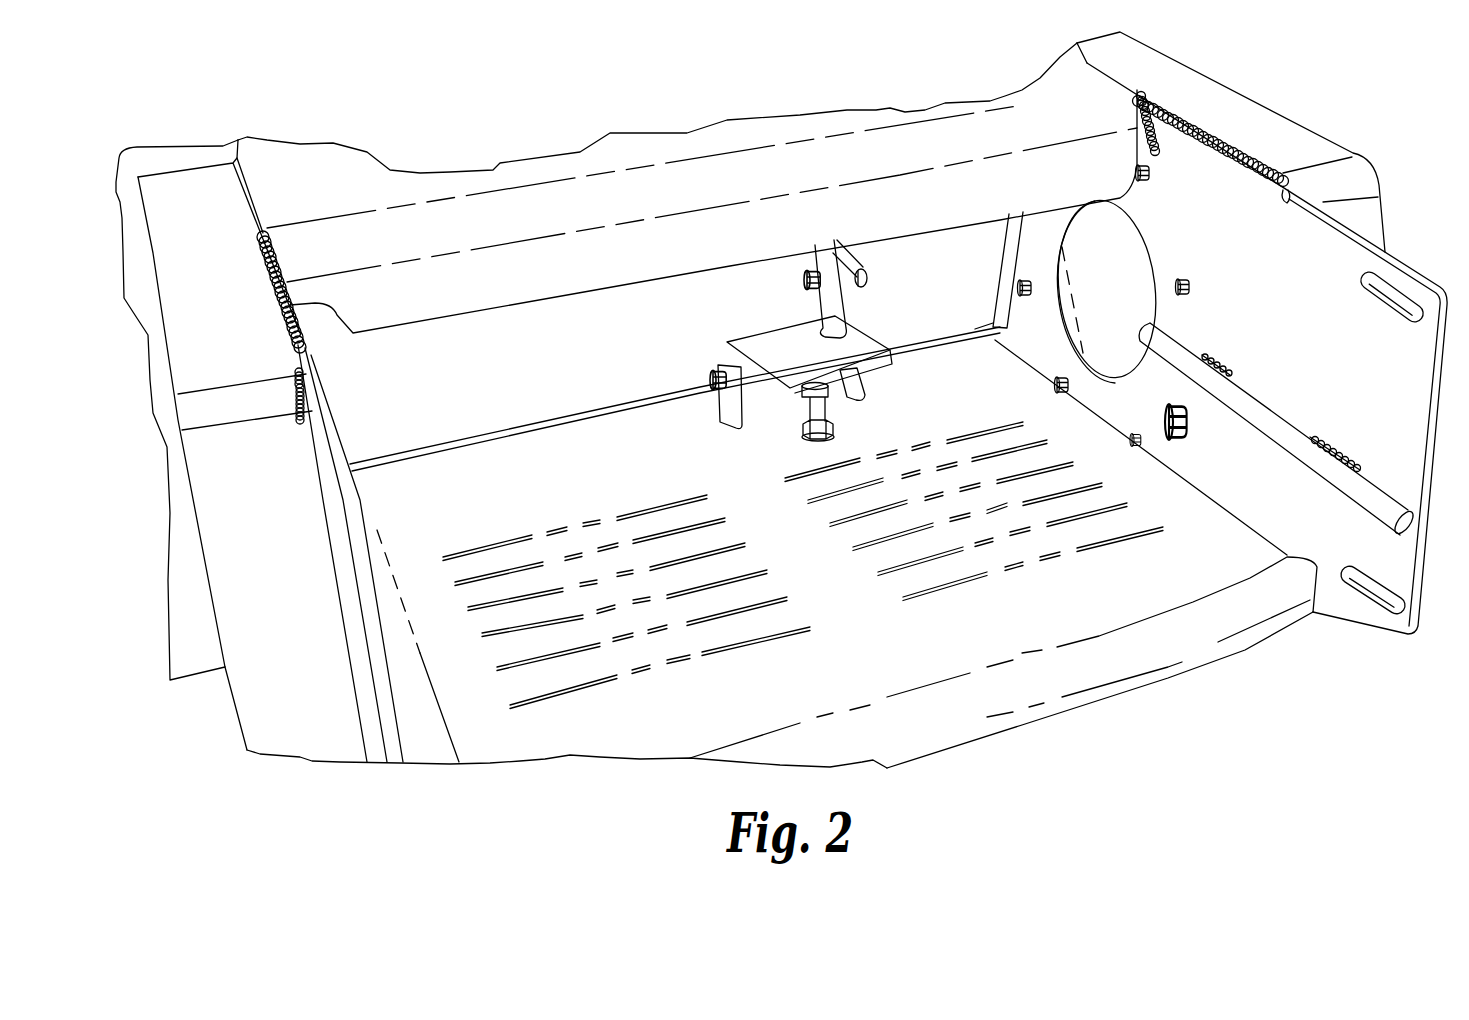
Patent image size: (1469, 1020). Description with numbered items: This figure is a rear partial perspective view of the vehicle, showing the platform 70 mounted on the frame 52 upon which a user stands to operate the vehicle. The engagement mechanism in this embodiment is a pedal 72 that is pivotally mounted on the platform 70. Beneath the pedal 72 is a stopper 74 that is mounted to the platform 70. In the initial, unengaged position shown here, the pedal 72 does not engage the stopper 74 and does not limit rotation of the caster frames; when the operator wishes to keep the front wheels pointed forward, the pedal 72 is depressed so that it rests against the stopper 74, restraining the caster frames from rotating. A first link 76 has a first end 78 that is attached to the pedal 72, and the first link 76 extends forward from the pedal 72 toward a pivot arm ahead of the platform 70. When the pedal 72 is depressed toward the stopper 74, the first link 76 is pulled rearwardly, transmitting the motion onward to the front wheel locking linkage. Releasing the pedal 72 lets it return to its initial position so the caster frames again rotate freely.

The frame 52 is at (233, 403).
The platform 70 is at (1095, 597).
The pedal 72 is at (780, 345).
The stopper 74 is at (843, 405).
The first link 76 is at (867, 281).
The first end 78 is at (832, 262).